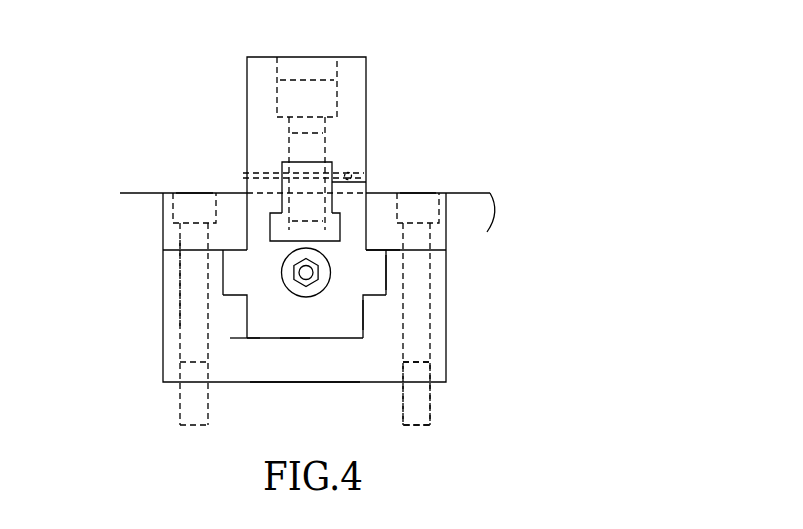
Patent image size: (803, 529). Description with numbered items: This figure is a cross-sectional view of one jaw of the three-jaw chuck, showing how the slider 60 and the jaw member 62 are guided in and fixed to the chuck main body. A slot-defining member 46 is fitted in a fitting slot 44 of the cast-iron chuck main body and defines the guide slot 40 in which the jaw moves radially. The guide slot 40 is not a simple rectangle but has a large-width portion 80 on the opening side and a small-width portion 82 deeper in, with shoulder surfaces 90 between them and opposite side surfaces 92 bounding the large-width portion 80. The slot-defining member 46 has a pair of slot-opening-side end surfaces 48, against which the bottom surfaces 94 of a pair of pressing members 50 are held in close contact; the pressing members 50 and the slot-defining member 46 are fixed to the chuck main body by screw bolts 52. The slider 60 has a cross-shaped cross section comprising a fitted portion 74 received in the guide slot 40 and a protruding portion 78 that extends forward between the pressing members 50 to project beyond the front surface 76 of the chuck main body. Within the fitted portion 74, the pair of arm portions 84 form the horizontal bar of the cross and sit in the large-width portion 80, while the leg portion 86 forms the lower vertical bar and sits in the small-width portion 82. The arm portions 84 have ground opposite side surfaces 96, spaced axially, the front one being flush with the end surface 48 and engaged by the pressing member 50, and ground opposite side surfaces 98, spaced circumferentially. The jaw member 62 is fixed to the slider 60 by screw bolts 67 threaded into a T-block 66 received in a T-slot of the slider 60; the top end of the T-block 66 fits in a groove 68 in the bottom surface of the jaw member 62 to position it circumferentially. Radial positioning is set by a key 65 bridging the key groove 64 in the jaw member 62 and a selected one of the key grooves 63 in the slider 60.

The guide slot 40 is at (318, 325).
The fitting slot 44 is at (447, 283).
The slot-defining member 46 is at (433, 320).
The slot-opening-side end surface 48 is at (434, 250).
The pressing member 50 is at (227, 197).
The screw bolt 52 is at (190, 196).
The slider 60 is at (229, 320).
The jaw member 62 is at (366, 58).
The key groove 63 is at (353, 176).
The key groove 64 is at (238, 172).
The key 65 is at (345, 174).
The T-block 66 is at (340, 213).
The screw bolt 67 is at (320, 78).
The groove 68 is at (308, 162).
The fitted portion 74 is at (295, 340).
The front surface 76 is at (468, 193).
The protruding portion 78 is at (255, 212).
The large-width portion 80 is at (384, 283).
The small-width portion 82 is at (349, 313).
The arm portion 84 is at (386, 266).
The leg portion 86 is at (280, 330).
The shoulder surface 90 is at (388, 290).
The side surface 92 is at (228, 292).
The bottom surface 94 is at (183, 253).
The side surface 96 is at (380, 243).
The side surface 98 is at (215, 268).